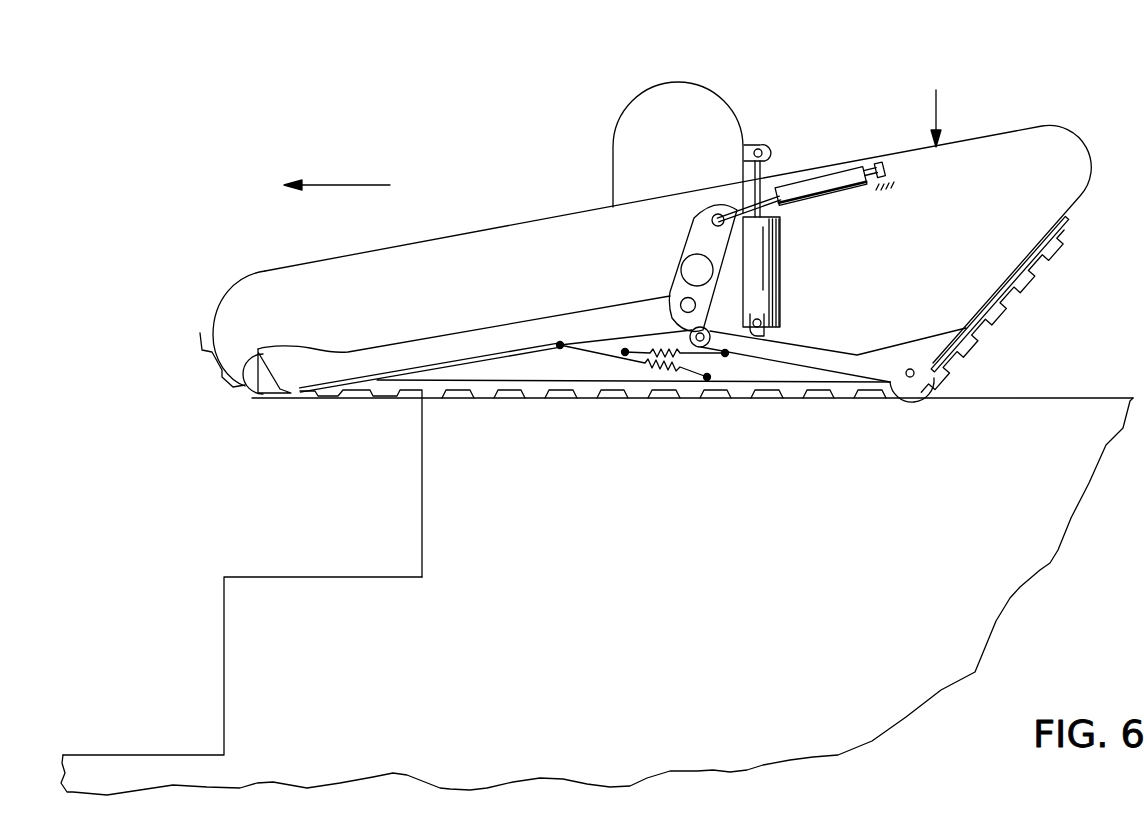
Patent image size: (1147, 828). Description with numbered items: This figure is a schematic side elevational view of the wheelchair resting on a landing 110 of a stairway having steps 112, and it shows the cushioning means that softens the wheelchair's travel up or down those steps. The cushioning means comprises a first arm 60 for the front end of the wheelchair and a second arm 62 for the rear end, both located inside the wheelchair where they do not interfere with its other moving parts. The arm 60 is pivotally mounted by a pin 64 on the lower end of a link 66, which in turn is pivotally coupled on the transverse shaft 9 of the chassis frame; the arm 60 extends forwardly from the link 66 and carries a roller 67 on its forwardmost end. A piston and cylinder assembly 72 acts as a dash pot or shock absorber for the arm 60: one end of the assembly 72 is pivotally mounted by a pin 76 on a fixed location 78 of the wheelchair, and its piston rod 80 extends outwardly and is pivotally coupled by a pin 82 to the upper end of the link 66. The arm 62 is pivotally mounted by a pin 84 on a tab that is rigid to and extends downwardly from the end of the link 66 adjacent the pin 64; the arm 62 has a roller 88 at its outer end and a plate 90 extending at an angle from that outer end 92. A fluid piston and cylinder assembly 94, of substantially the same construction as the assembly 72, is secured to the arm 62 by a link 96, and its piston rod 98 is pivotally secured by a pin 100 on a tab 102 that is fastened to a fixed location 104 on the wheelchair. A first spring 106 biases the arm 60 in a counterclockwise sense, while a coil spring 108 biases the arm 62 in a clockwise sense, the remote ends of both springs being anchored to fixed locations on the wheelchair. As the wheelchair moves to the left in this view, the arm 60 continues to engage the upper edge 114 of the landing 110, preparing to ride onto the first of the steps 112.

The transverse shaft 9 is at (690, 259).
The first arm 60 is at (577, 308).
The second arm 62 is at (837, 358).
The pin 64 is at (679, 300).
The link 66 is at (679, 265).
The roller 67 is at (262, 396).
The piston and cylinder assembly 72 is at (822, 202).
The pin 76 is at (886, 172).
The fixed location 78 is at (891, 188).
The piston rod 80 is at (770, 194).
The pin 82 is at (713, 214).
The pin 84 is at (706, 331).
The roller 88 is at (912, 398).
The plate 90 is at (982, 298).
The outer end 92 is at (930, 336).
The fluid piston and cylinder assembly 94 is at (785, 280).
The link 96 is at (770, 332).
The piston rod 98 is at (762, 168).
The pin 100 is at (757, 147).
The tab 102 is at (745, 152).
The fixed location 104 is at (706, 86).
The first spring 106 is at (662, 373).
The coil spring 108 is at (726, 356).
The landing 110 is at (1032, 397).
The steps 112 is at (335, 575).
The upper edge 114 is at (423, 397).